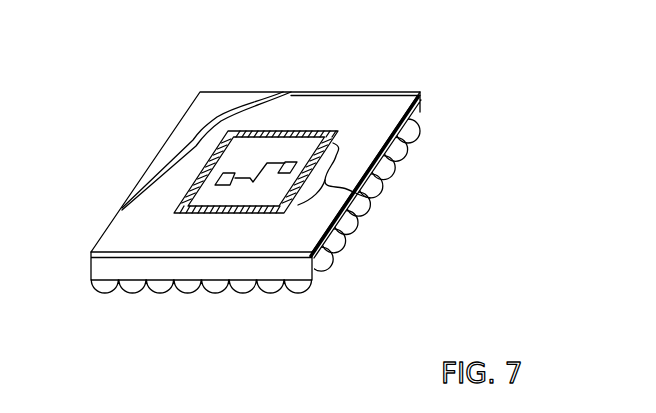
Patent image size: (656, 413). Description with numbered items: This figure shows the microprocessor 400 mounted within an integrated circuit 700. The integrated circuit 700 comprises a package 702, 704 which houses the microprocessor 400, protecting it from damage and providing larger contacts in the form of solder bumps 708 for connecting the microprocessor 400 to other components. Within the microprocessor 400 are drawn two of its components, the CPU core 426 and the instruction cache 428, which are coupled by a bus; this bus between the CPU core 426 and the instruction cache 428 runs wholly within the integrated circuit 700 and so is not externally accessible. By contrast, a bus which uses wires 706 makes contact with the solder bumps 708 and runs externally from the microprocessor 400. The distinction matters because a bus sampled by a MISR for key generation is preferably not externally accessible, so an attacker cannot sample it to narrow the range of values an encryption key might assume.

The integrated circuit 700 is at (470, 127).
The package 702 is at (105, 268).
The package 704 is at (188, 139).
The wires 706 is at (370, 198).
The solder bumps 708 is at (340, 240).
The microprocessor 400 is at (271, 148).
The CPU core 426 is at (278, 173).
The instruction cache 428 is at (215, 185).